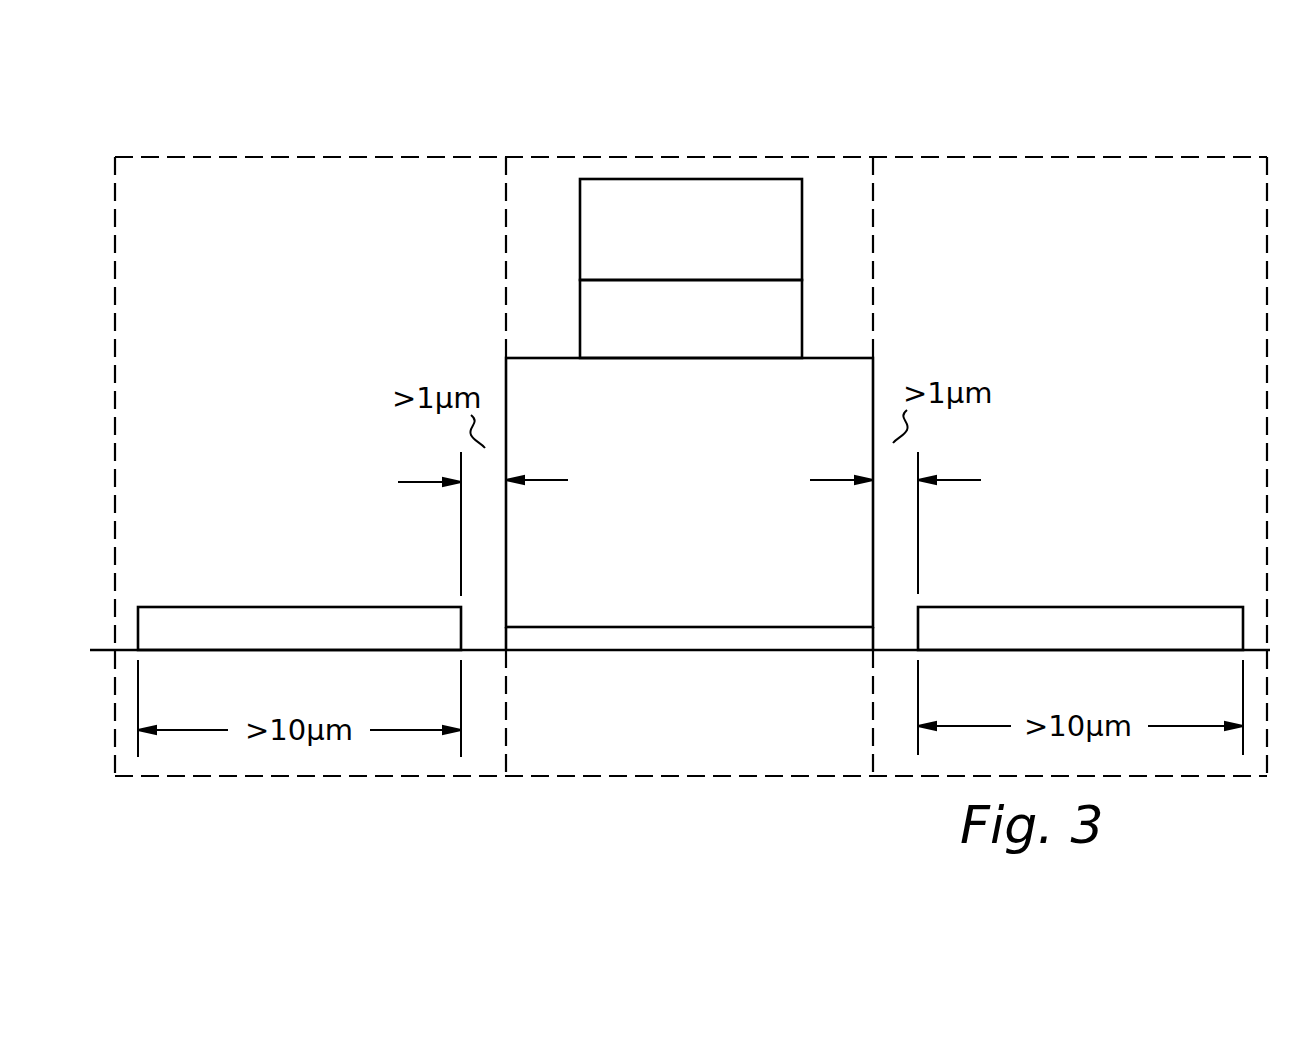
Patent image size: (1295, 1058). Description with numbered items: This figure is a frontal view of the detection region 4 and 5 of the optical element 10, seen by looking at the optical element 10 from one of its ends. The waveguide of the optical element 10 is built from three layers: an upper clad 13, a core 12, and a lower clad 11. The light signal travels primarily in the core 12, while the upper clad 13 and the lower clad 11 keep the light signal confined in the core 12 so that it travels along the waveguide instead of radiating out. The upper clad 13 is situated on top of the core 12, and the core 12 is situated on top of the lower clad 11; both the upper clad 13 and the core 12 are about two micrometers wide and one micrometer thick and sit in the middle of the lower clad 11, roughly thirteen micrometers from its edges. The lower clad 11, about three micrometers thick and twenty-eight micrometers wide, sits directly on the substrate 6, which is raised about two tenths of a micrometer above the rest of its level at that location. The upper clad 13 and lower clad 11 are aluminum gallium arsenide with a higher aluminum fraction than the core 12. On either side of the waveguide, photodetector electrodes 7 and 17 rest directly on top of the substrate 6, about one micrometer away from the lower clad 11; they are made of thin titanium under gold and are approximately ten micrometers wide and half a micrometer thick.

The optical element 10 is at (822, 100).
The detection region 4 is at (320, 156).
The detection region 5 is at (1103, 151).
The substrate 6 is at (687, 678).
The photodetector electrode 7 is at (319, 607).
The photodetector electrode 17 is at (1099, 603).
The lower clad 11 is at (698, 415).
The core 12 is at (768, 333).
The upper clad 13 is at (768, 240).